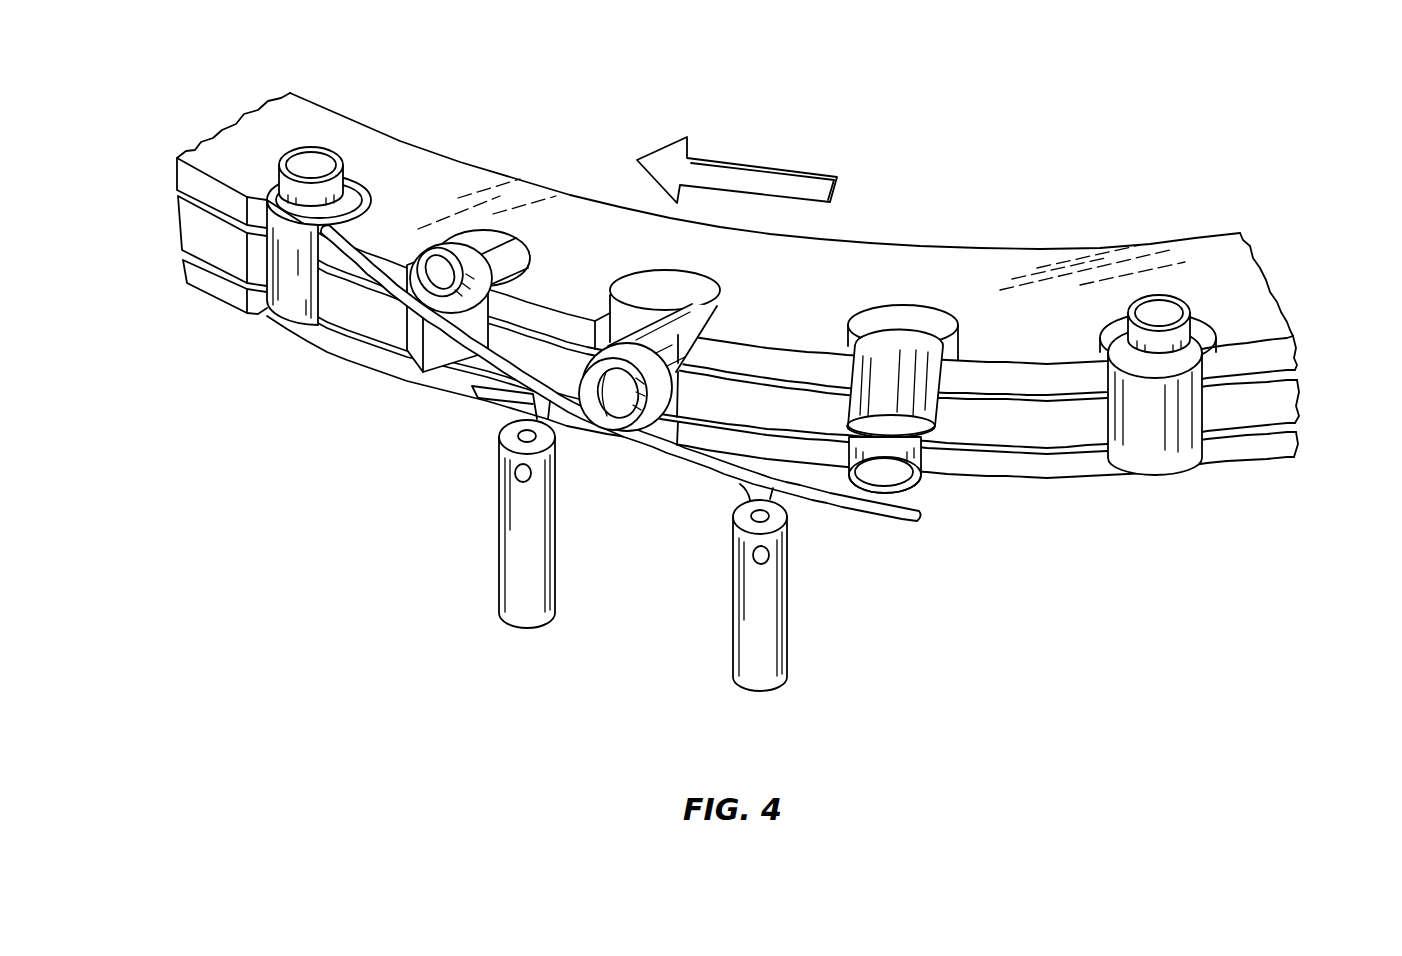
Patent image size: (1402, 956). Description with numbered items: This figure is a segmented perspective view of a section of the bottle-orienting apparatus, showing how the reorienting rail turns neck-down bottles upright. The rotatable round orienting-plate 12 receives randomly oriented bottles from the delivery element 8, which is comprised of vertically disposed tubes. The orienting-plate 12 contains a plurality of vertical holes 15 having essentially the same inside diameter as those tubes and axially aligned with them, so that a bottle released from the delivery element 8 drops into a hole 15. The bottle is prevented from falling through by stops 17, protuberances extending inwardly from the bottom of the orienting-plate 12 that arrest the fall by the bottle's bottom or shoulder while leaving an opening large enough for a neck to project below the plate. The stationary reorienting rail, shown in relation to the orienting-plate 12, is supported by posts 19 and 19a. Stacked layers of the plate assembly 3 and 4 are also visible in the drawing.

The orienting-plate 12 is at (177, 220).
The intermediate plate 3 is at (1277, 381).
The lower plate 4 is at (1293, 433).
The stop 17 is at (250, 321).
The vertical hole 15 is at (911, 304).
The delivery element 8 is at (470, 357).
The post 19a is at (497, 578).
The post 19 is at (733, 643).